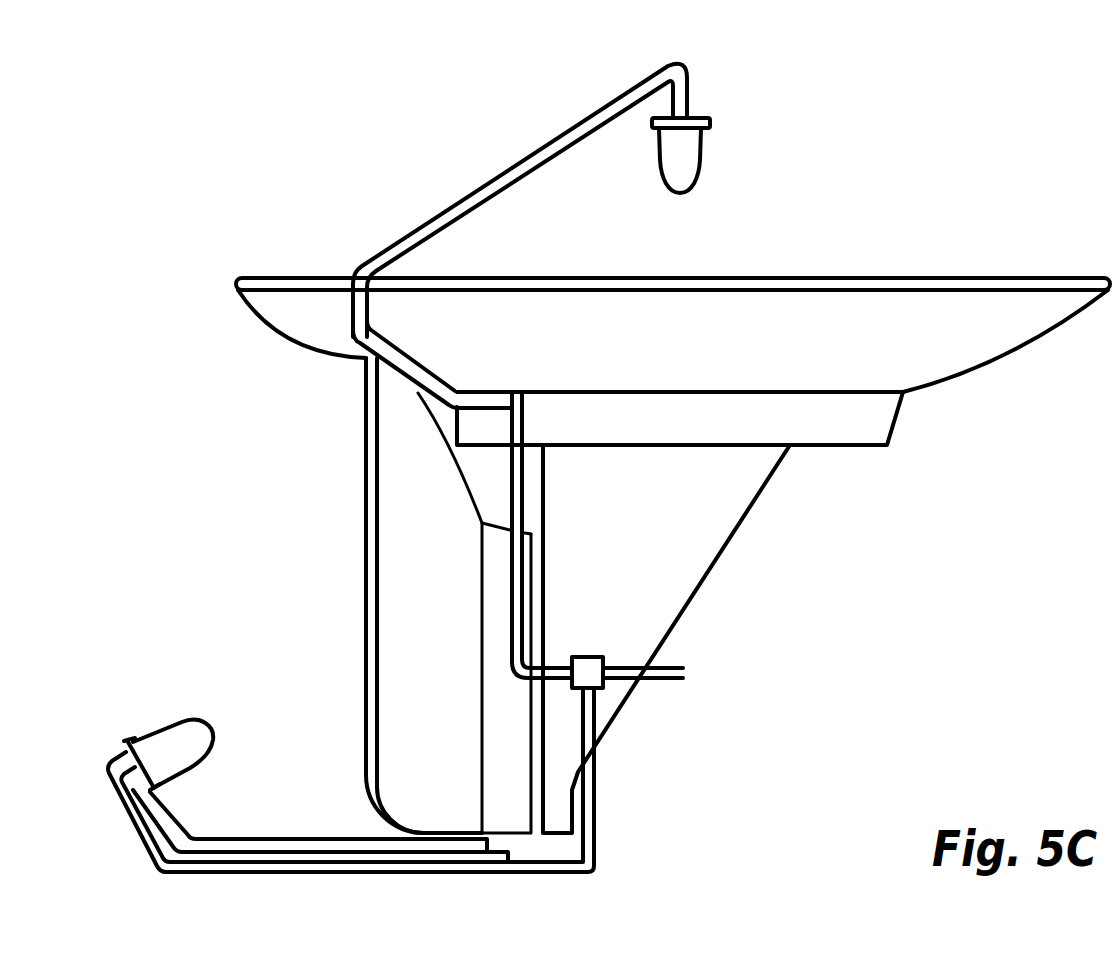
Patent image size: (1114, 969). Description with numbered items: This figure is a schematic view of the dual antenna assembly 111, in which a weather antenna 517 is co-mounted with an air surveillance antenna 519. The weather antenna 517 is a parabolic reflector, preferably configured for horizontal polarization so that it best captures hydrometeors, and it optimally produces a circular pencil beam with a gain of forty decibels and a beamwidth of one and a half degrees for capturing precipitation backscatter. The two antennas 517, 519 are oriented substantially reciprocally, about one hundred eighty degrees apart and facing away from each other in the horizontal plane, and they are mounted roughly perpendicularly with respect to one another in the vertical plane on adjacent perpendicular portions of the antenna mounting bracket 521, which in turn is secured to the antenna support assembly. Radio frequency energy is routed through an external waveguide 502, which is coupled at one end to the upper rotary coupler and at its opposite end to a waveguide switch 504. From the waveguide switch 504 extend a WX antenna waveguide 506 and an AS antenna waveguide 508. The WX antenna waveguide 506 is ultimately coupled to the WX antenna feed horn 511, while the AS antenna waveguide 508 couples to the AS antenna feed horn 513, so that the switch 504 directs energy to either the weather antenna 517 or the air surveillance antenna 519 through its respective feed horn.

The dual antenna assembly 111 is at (968, 595).
The external waveguide 502 is at (670, 680).
The waveguide switch 504 is at (590, 670).
The WX antenna waveguide 506 is at (520, 543).
The AS antenna waveguide 508 is at (597, 818).
The WX antenna feed horn 511 is at (697, 160).
The AS antenna feed horn 513 is at (182, 743).
The weather antenna 517 is at (942, 338).
The air surveillance antenna 519 is at (418, 602).
The antenna mounting bracket 521 is at (640, 588).